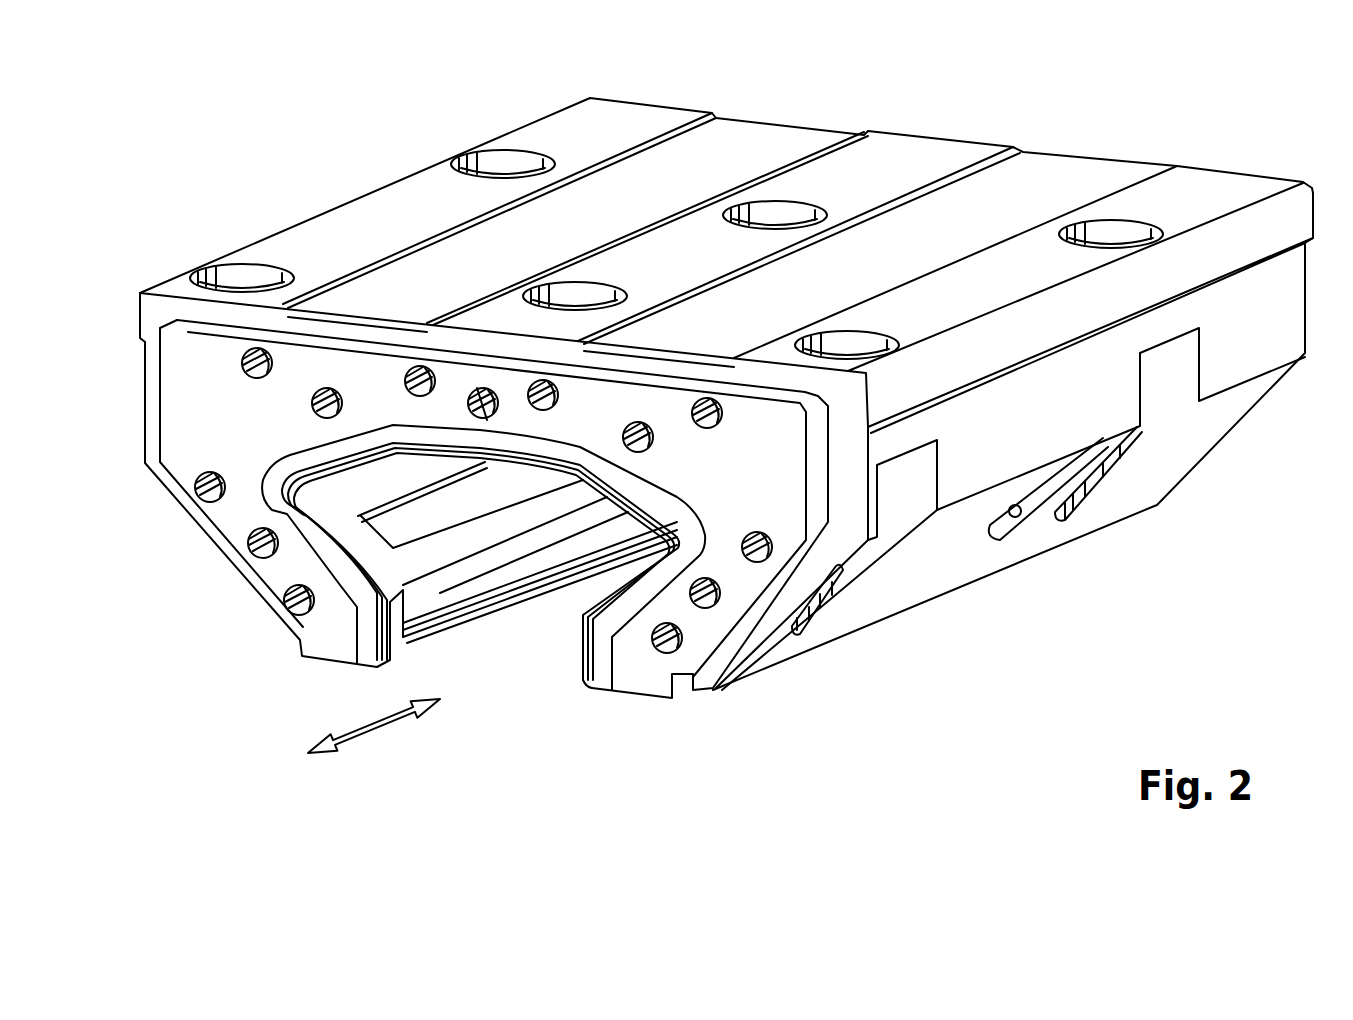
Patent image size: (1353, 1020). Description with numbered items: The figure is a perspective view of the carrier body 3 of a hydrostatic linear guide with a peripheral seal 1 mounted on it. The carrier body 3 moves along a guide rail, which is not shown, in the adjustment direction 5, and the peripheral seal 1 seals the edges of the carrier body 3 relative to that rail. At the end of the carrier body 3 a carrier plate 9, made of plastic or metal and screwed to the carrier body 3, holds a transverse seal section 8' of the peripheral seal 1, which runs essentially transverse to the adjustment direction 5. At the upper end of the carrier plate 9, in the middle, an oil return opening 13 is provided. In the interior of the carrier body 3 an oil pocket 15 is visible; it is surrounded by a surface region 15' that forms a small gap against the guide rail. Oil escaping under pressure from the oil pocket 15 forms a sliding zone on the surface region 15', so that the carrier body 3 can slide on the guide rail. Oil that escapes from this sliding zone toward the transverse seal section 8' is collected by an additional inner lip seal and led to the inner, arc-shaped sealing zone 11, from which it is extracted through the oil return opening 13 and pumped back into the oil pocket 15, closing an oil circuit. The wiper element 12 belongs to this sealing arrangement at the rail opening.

The peripheral seal 1 is at (577, 667).
The carrier body 3 is at (937, 150).
The adjustment direction 5 is at (380, 727).
The transverse seal section 8' is at (500, 544).
The carrier plate 9 is at (180, 472).
The arc-shaped sealing zone 11 is at (477, 388).
The wiper lip 12 is at (492, 607).
The oil return opening 13 is at (487, 420).
The oil pocket 15 is at (434, 564).
The surface region 15' is at (413, 561).